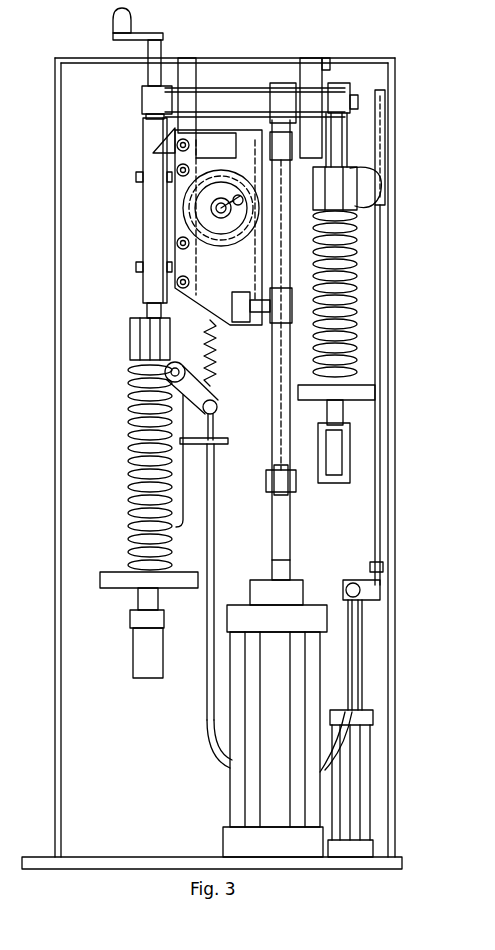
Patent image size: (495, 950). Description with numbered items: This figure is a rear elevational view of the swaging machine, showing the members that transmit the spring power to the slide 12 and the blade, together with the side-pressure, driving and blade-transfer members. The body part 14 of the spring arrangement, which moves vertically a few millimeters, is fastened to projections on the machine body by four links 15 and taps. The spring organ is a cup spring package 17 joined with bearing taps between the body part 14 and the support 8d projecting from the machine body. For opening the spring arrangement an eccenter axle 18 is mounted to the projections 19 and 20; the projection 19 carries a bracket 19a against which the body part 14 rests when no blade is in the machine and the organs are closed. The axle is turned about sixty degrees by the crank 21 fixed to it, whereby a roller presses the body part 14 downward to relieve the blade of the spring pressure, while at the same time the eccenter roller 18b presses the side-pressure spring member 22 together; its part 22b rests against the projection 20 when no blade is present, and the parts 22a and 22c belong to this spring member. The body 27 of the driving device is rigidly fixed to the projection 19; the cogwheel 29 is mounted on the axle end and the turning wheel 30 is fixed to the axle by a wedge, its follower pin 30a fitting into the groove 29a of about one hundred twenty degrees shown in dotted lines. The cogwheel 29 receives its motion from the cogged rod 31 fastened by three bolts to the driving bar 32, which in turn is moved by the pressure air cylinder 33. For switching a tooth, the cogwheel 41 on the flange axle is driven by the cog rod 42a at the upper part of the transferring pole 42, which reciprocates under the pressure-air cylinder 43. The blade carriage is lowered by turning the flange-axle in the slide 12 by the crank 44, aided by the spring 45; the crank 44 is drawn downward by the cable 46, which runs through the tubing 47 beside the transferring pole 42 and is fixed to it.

The support 8d is at (147, 662).
The slide 12 is at (183, 357).
The body part of the spring arrangement 14 is at (150, 210).
The links 15 is at (176, 172).
The cup spring package 17 is at (130, 405).
The eccenter axle 18 is at (222, 95).
The eccenter roller 18b is at (343, 85).
The projection 19 is at (185, 66).
The bracket 19a is at (160, 145).
The projection 20 is at (318, 70).
The crank 21 is at (290, 78).
The spring member 22 is at (356, 238).
The spring rod 22a is at (338, 410).
The part of the spring member 22b is at (343, 195).
The cross bar 22c is at (365, 393).
The body of the driving device 27 is at (221, 221).
The cogwheel 29 is at (216, 145).
The groove 29a is at (237, 205).
The turning wheel 30 is at (210, 215).
The follower pin 30a is at (208, 210).
The cogged rod 31 is at (260, 280).
The driving bar 32 is at (272, 435).
The pressure air cylinder 33 is at (275, 718).
The cogwheel 41 is at (380, 173).
The transferring pole 42 is at (380, 515).
The cog rod 42a is at (385, 105).
The pressure-air cylinder 43 is at (360, 752).
The crank 44 is at (170, 378).
The spring 45 is at (215, 370).
The cable 46 is at (215, 420).
The tubing 47 is at (214, 482).